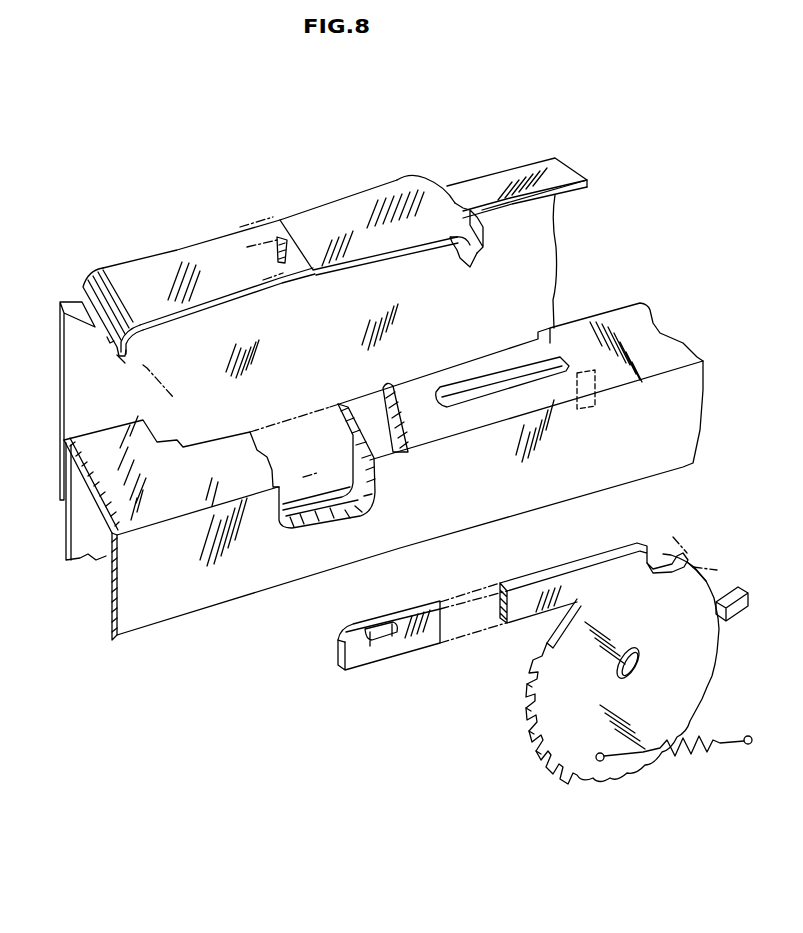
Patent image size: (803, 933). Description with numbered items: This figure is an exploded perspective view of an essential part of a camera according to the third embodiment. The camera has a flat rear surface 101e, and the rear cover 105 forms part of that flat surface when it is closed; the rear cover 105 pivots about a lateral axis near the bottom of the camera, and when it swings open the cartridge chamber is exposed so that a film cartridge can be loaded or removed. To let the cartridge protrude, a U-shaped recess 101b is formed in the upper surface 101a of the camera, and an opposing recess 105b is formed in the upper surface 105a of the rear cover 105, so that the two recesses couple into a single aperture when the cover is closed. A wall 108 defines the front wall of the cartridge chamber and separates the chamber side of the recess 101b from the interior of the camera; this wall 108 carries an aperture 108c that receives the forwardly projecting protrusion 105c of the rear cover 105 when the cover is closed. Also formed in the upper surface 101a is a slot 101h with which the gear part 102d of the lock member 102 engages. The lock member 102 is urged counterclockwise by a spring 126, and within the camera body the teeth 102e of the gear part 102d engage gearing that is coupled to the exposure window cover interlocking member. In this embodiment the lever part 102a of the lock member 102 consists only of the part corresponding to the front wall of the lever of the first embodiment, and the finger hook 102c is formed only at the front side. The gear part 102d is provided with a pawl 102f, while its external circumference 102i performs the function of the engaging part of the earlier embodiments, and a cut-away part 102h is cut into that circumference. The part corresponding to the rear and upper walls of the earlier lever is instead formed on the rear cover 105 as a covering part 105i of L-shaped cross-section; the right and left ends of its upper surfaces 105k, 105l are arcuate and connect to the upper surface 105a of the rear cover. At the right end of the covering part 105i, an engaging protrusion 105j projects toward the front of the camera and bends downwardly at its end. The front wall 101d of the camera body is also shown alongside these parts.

The upper surface of camera 101a is at (600, 318).
The recess 101b is at (397, 453).
The front wall of frame 101d is at (160, 567).
The rear surface of camera 101e is at (80, 423).
The slot 101h is at (440, 387).
The lock member 102 is at (590, 543).
The lever part 102a is at (338, 668).
The finger hook 102c is at (378, 630).
The gear part 102d is at (693, 690).
The teeth 102e is at (568, 782).
The pawl 102f is at (732, 620).
The cut-away part 102h is at (661, 553).
The external circumference of gear part 102i is at (692, 537).
The rear cover 105 is at (480, 177).
The upper surface of rear cover 105a is at (521, 177).
The recess 105b is at (288, 246).
The protrusion 105c is at (488, 238).
The covering part 105i is at (340, 217).
The engaging protrusion 105j is at (463, 261).
The upper surface of covering part 105k is at (92, 284).
The upper surface of covering part 105l is at (440, 220).
The wall 108 is at (352, 440).
The aperture 108c is at (595, 397).
The spring 126 is at (693, 752).